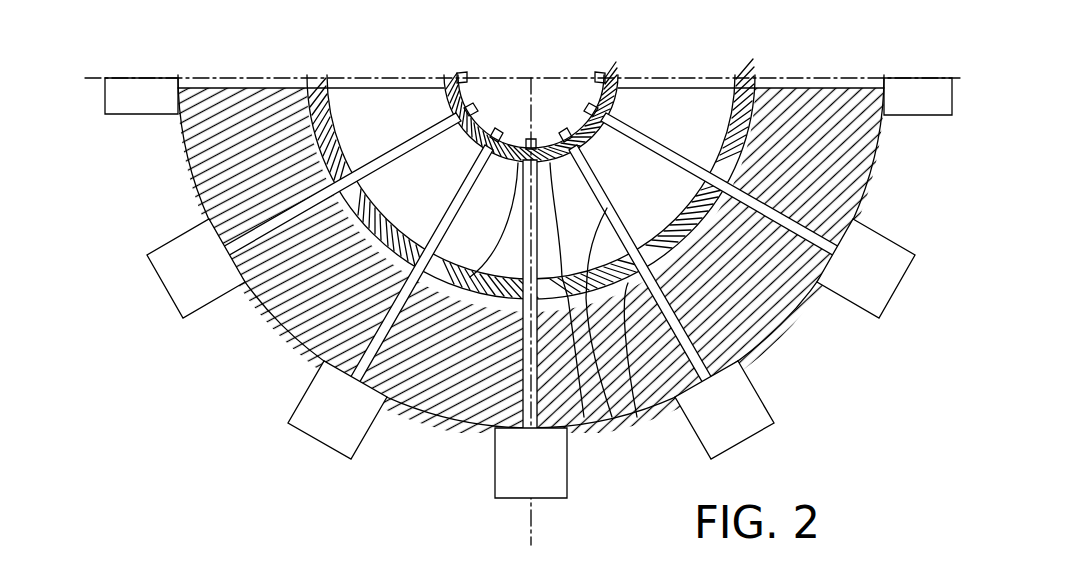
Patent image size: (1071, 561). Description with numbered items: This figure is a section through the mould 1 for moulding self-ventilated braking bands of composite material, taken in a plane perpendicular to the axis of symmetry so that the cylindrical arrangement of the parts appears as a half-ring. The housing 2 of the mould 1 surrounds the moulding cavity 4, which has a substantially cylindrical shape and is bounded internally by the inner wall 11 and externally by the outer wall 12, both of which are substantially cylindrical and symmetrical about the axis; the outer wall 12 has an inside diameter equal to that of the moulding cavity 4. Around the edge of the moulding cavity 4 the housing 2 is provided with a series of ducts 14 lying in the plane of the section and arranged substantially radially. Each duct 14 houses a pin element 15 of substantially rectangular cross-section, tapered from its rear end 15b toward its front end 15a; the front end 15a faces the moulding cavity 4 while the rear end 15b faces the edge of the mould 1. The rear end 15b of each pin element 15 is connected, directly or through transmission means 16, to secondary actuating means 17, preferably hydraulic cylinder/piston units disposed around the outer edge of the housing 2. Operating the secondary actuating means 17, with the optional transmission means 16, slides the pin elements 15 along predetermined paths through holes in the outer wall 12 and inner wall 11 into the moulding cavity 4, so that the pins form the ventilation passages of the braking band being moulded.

The mould 1 is at (200, 470).
The housing 2 is at (850, 180).
The moulding cavity 4 is at (655, 102).
The inner wall 11 is at (420, 360).
The outer wall 12 is at (740, 203).
The ducts 14 is at (700, 347).
The pin elements 15 is at (612, 417).
The front end 15a is at (584, 417).
The rear end 15b is at (637, 417).
The transmission means 16 is at (672, 388).
The secondary actuating means 17 is at (922, 114).